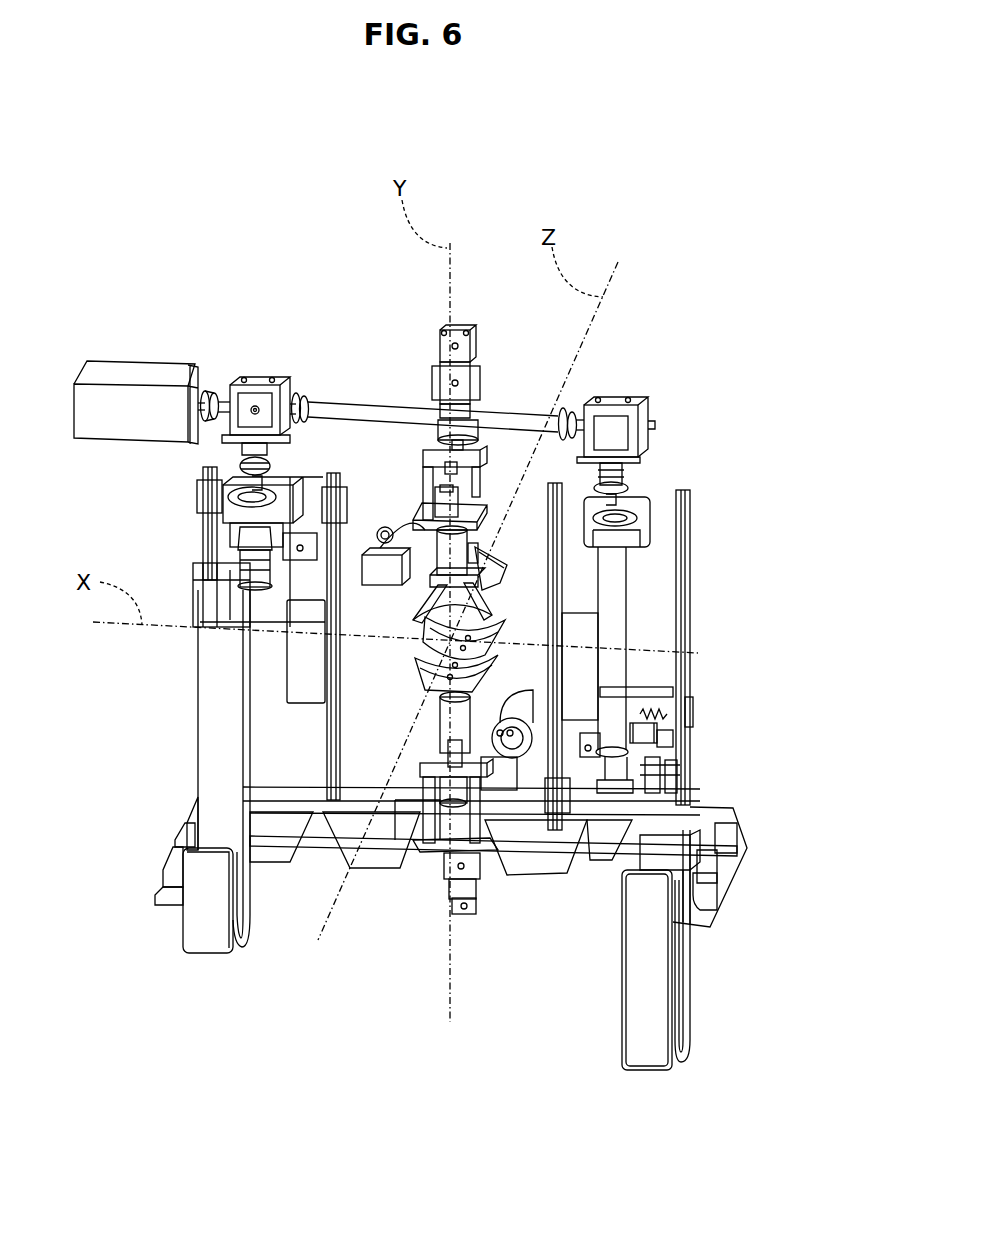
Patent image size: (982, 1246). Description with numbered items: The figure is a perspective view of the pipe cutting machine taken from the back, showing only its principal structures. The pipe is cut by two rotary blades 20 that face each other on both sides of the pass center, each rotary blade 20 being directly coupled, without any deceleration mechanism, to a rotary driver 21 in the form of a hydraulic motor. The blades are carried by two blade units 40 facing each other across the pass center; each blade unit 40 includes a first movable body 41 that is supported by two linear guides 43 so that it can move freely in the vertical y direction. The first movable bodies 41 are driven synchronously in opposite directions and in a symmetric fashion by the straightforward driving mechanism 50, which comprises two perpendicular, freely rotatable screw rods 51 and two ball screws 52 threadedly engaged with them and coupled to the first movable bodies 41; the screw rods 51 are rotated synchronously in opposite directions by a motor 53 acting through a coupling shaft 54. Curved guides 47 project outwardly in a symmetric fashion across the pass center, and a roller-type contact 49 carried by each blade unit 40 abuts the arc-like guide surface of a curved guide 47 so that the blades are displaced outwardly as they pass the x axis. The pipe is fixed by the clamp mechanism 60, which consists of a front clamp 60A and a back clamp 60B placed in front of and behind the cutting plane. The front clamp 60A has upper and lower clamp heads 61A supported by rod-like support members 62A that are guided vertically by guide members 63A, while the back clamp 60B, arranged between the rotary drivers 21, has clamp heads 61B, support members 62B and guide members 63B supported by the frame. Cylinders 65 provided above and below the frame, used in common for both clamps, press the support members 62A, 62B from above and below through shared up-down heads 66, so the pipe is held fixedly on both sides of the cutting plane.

The rotary blade 20 is at (425, 490).
The rotary driver 21 is at (380, 570).
The blade unit 40 is at (320, 470).
The first movable body 41 is at (308, 470).
The linear guide 43 is at (205, 470).
The curved guide 47 is at (300, 665).
The contact 49 is at (253, 632).
The straightforward driving mechanism 50 is at (615, 395).
The screw rod 51 is at (680, 500).
The ball screw 52 is at (622, 512).
The motor 53 is at (132, 374).
The coupling shaft 54 is at (400, 400).
The clamp mechanism 60 is at (752, 628).
The front clamp 60A is at (620, 600).
The back clamp 60B is at (620, 640).
The clamp head 61A is at (490, 563).
The clamp head 61B is at (430, 628).
The support member 62A is at (620, 580).
The support member 62B is at (230, 540).
The guide member 63A is at (615, 565).
The guide member 63B is at (225, 510).
The cylinder 65 is at (458, 328).
The up-down head 66 is at (490, 440).